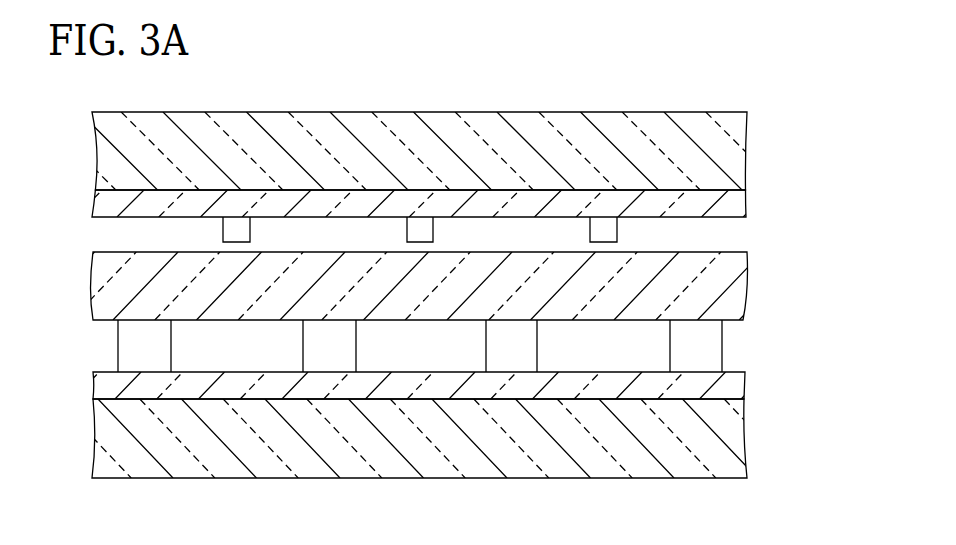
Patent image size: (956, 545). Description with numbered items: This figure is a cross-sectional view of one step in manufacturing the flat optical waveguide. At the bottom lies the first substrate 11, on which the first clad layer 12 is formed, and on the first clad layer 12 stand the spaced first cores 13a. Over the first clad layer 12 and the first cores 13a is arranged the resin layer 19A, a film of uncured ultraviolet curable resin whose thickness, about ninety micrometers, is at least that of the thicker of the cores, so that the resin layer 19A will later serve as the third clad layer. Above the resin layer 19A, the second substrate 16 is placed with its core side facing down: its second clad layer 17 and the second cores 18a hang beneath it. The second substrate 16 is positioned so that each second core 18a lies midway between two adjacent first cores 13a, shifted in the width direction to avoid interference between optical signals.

The second substrate 16 is at (740, 147).
The second clad layer 17 is at (730, 202).
The second cores 18a is at (610, 228).
The resin layer 19A is at (740, 277).
The first cores 13a is at (713, 342).
The first clad layer 12 is at (740, 383).
The first substrate 11 is at (732, 433).